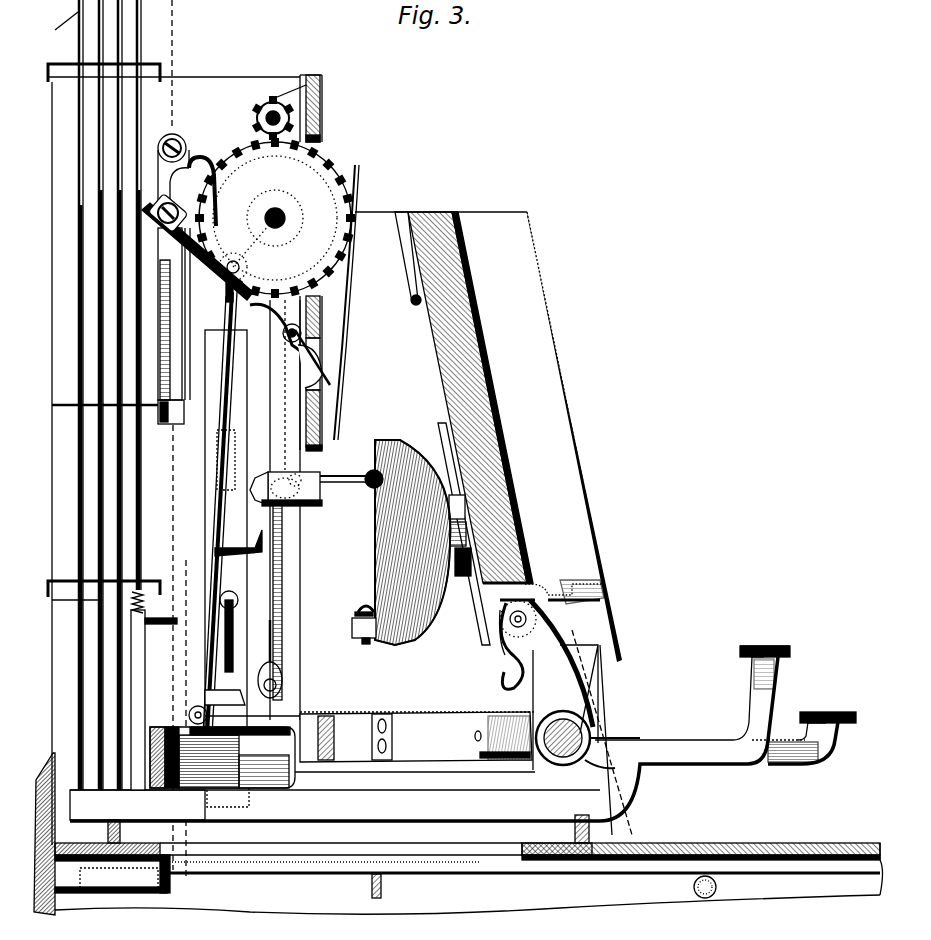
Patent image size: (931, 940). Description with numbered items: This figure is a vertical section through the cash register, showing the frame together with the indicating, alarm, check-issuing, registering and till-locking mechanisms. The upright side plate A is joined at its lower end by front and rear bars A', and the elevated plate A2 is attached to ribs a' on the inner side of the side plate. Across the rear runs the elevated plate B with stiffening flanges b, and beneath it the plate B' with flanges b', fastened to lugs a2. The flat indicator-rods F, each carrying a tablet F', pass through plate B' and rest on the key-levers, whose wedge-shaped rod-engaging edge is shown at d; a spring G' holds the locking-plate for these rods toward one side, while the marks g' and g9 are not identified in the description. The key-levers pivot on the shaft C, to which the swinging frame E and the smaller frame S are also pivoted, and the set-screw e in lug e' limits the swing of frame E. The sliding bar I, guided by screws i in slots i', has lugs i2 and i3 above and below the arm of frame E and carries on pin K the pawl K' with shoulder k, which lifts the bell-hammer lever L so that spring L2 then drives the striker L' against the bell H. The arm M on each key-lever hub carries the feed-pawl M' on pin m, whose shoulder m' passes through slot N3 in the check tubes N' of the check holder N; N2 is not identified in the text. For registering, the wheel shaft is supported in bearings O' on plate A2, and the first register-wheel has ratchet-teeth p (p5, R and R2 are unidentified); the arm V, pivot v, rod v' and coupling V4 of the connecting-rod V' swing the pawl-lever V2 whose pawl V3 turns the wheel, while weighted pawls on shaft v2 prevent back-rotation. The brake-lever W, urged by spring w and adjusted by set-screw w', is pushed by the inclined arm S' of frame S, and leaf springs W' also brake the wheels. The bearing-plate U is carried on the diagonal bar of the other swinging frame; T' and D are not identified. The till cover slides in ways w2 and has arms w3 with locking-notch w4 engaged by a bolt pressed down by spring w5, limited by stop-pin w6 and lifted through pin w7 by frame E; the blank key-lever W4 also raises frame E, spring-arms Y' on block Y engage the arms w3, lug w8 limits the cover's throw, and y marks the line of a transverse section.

The indicator-rods F is at (100, 396).
The tablet F' is at (108, 20).
The elevated plate B is at (174, 61).
The flange b is at (109, 75).
The lower plate B' is at (104, 577).
The flange b' is at (103, 576).
The lug a2 is at (62, 600).
The bracket g' is at (109, 412).
The vertical flange a' is at (328, 605).
The block g9 is at (161, 436).
The spring G' is at (174, 314).
The pawl V3 is at (192, 170).
The arm V is at (236, 430).
The pawl-lever V2 is at (200, 262).
The screw-coupling V4 is at (210, 483).
The connecting-rod V' is at (207, 513).
The bearing O' is at (275, 218).
The pawl p5 is at (268, 140).
The ratchet-teeth p is at (335, 172).
The small gear R is at (256, 120).
The gear arm R2 is at (286, 100).
The elevated plate A2 is at (322, 112).
The side plate A is at (406, 385).
The brake-lever W is at (288, 510).
The leaf spring W' is at (355, 302).
The spring w is at (287, 391).
The shaft v2 is at (305, 333).
The rod v' is at (324, 359).
The pivot-pin v is at (204, 516).
The bell-hammer lever L is at (310, 479).
The hammer L' is at (369, 484).
The spring L2 is at (283, 555).
The sliding bar I is at (248, 642).
The guide pin i is at (230, 507).
The slot i' is at (226, 504).
The upper lug i2 is at (210, 694).
The lower lug i3 is at (245, 806).
The pawl K' is at (238, 532).
The pivot-pin K is at (227, 539).
The shoulder k is at (212, 548).
The set-screw w' is at (282, 659).
The block Y is at (266, 804).
The spring-arm Y' is at (187, 883).
The inclined arm S' is at (222, 757).
The swinging frame S is at (228, 725).
The swinging frame E is at (170, 790).
The wedge-shaped edge d is at (100, 790).
The base bar D is at (463, 733).
The bearing-plate U is at (321, 771).
The table block T' is at (417, 737).
The shaft C is at (592, 736).
The check holder N is at (488, 437).
The check tube N' is at (479, 397).
The beam top N2 is at (420, 212).
The slot N3 is at (566, 584).
The bell H is at (380, 532).
The set-screw e is at (370, 629).
The lug e' is at (348, 654).
The arm M is at (566, 717).
The feed-pawl M' is at (499, 646).
The pin m is at (550, 617).
The shoulder m' is at (549, 574).
The connecting bar A' is at (467, 851).
The arm w3 is at (520, 858).
The ways w2 is at (467, 896).
The stop lug w8 is at (376, 900).
The locking-notch w4 is at (172, 885).
The blank key-lever W4 is at (148, 678).
The spring w5 is at (146, 604).
The pin w7 is at (162, 628).
The stop-pin w6 is at (160, 808).
The section line y is at (442, 904).